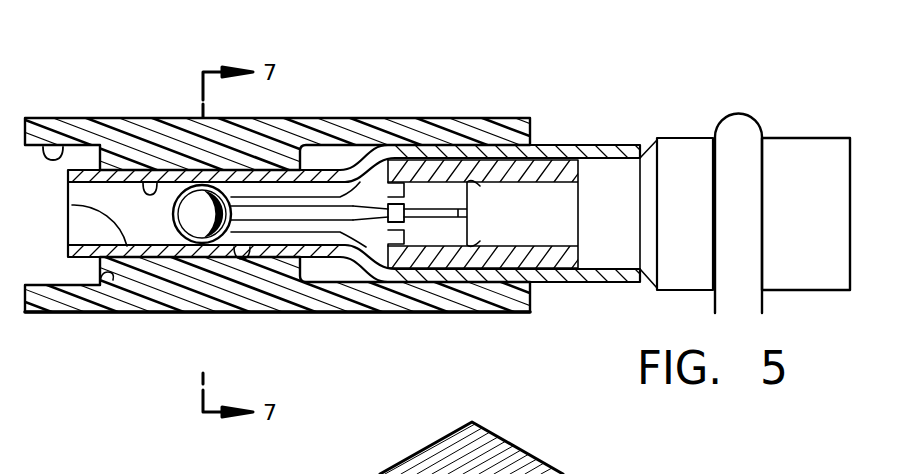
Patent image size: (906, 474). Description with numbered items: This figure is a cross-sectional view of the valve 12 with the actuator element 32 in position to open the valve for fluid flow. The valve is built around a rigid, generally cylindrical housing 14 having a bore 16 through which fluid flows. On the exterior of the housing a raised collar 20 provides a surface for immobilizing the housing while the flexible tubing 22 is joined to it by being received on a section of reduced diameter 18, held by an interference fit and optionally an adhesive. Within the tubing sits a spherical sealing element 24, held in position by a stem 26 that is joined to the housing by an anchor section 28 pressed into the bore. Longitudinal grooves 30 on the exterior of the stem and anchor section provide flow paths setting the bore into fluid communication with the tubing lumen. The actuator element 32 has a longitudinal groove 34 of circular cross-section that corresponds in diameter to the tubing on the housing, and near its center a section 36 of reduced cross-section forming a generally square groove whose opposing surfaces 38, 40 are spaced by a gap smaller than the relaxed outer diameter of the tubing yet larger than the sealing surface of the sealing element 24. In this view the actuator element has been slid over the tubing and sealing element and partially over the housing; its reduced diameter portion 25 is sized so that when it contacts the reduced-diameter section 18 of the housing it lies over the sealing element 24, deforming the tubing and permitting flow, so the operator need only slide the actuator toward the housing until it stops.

The valve 12 is at (563, 87).
The housing 14 is at (797, 137).
The bore 16 is at (549, 233).
The section of reduced diameter 18 is at (500, 146).
The raised collar 20 is at (737, 137).
The flexible tubing 22 is at (110, 167).
The spherical sealing element 24 is at (197, 207).
The reduced diameter portion of the actuator element 25 is at (68, 205).
The stem 26 is at (307, 214).
The anchor section 28 is at (484, 220).
The longitudinal grooves 30 is at (366, 232).
The actuator element 32 is at (173, 298).
The longitudinal groove 34 is at (37, 147).
The section of reduced cross-section 36 is at (95, 285).
The opposing surface 38 is at (250, 252).
The opposing surface 40 is at (149, 188).